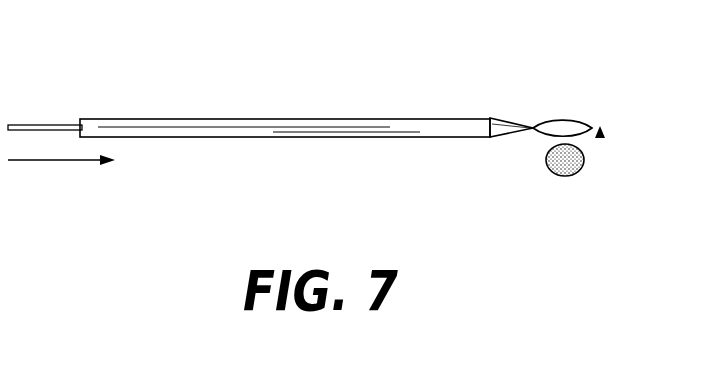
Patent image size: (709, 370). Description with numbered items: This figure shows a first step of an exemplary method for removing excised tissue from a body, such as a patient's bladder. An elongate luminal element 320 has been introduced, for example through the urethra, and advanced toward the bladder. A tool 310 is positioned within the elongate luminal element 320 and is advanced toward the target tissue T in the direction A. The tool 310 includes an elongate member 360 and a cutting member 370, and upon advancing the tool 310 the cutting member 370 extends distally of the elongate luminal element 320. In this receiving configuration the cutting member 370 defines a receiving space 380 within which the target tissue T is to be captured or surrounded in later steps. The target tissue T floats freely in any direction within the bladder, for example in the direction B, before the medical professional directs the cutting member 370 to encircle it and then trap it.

The tool 310 is at (613, 96).
The elongate luminal element 320 is at (165, 118).
The elongate member 360 is at (52, 125).
The cutting member 370 is at (544, 118).
The receiving space 380 is at (568, 124).
The direction A is at (45, 162).
The direction B is at (600, 134).
The target tissue T is at (554, 165).